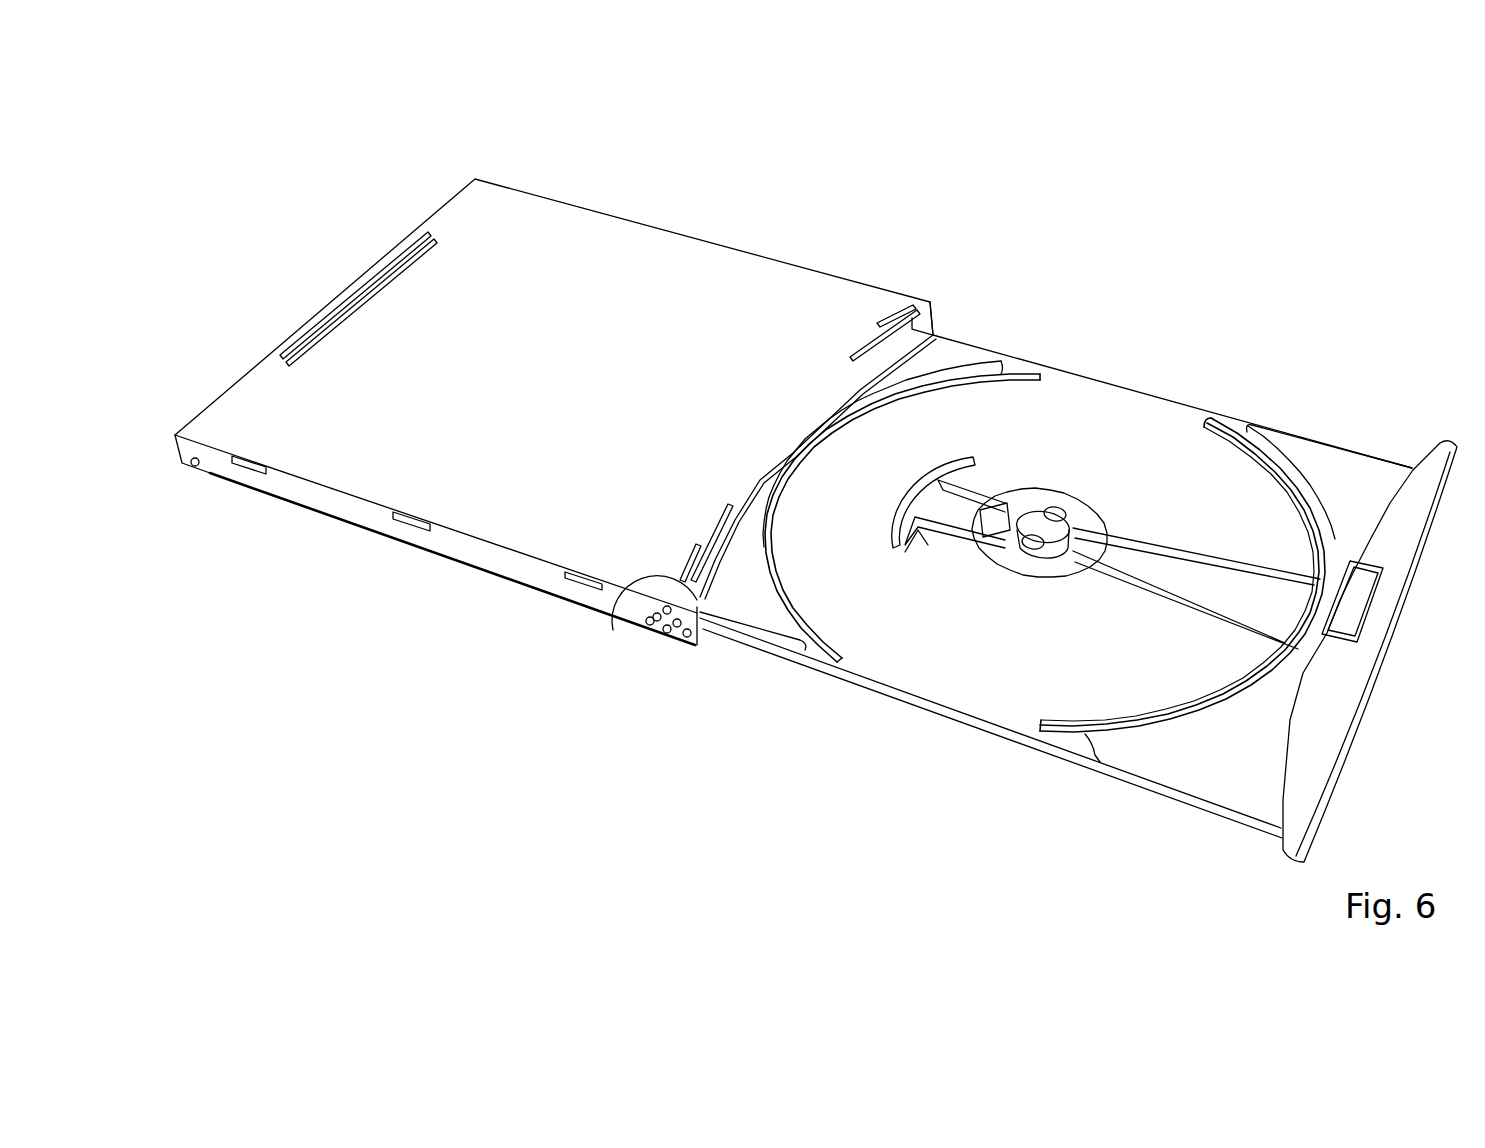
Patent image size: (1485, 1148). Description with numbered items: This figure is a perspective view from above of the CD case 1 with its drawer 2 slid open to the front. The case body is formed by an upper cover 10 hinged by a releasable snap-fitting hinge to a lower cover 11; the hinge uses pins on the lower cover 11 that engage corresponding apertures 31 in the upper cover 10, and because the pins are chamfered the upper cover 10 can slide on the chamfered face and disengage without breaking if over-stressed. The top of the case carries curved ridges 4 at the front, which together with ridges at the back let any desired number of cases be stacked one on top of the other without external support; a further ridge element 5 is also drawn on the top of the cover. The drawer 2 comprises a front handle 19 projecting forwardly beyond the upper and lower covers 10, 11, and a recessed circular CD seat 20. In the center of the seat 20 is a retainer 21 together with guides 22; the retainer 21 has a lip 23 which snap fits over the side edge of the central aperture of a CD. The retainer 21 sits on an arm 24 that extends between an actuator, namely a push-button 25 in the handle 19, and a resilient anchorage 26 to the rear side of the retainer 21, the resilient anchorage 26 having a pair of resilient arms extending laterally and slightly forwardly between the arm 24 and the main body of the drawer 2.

The CD case 1 is at (408, 158).
The drawer 2 is at (1152, 385).
The curved ridges 4 is at (888, 312).
The clip rail 5 is at (370, 283).
The upper cover 10 is at (590, 215).
The lower cover 11 is at (450, 565).
The front handle 19 is at (1345, 773).
The recessed circular CD seat 20 is at (1075, 392).
The retainer 21 is at (1075, 560).
The guides 22 is at (1062, 510).
The lip 23 is at (1003, 502).
The arm 24 is at (1177, 592).
The push-button 25 is at (1365, 638).
The resilient anchorage 26 is at (898, 492).
The apertures 31 is at (190, 468).